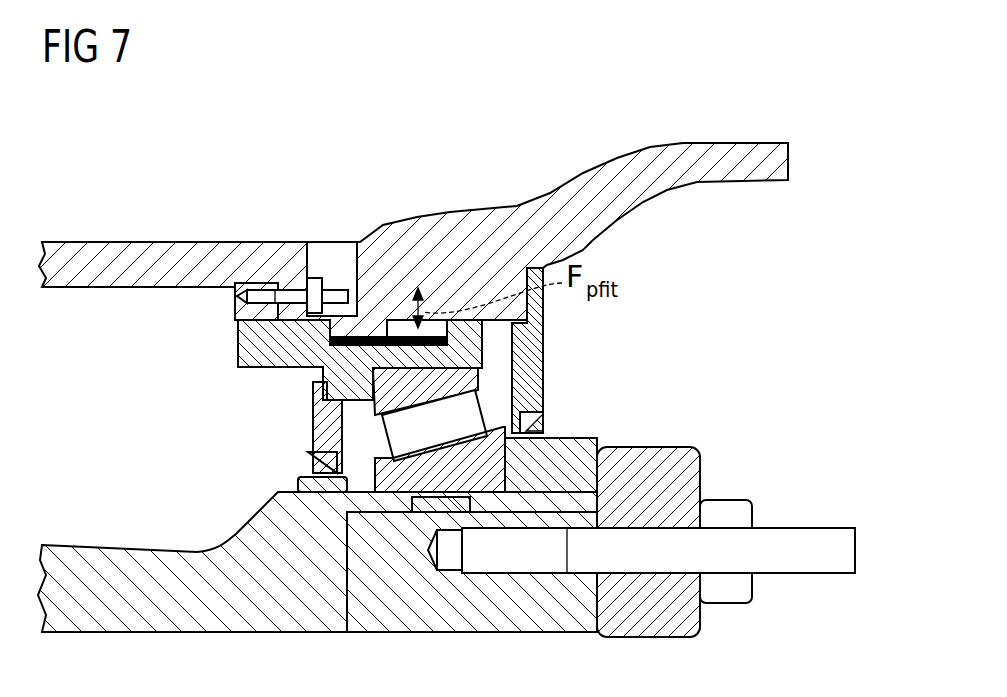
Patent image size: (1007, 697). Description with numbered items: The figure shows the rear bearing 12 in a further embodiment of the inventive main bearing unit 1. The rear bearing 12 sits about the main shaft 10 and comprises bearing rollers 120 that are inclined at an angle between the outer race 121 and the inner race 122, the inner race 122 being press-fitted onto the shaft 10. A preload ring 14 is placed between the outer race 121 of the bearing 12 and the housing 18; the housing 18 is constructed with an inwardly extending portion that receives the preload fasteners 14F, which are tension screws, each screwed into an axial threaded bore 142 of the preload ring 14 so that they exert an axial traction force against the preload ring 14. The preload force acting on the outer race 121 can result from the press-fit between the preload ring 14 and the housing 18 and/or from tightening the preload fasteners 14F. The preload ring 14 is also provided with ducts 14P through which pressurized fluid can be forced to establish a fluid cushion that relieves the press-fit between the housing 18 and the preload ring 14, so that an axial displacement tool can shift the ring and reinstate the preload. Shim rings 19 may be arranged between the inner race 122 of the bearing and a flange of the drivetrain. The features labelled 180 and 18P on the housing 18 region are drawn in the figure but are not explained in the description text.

The main bearing unit 1 is at (172, 152).
The main shaft 10 is at (148, 560).
The rear bearing 12 is at (505, 400).
The bearing rollers 120 is at (403, 437).
The outer race 121 is at (465, 380).
The inner race 122 is at (393, 478).
The preload ring 14 is at (250, 352).
The preload fasteners 14F is at (372, 332).
The ducts 14P is at (400, 330).
The axial threaded bore 142 is at (262, 292).
The housing 18 is at (72, 250).
The pocket / recess 180 is at (320, 258).
The protrusion of plate 18 18P is at (278, 318).
The shim rings 19 is at (590, 446).